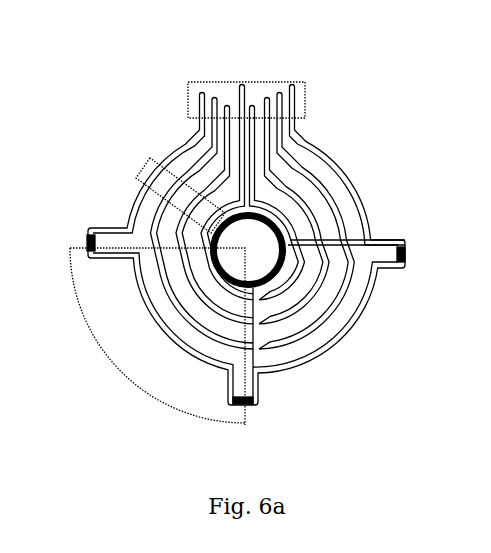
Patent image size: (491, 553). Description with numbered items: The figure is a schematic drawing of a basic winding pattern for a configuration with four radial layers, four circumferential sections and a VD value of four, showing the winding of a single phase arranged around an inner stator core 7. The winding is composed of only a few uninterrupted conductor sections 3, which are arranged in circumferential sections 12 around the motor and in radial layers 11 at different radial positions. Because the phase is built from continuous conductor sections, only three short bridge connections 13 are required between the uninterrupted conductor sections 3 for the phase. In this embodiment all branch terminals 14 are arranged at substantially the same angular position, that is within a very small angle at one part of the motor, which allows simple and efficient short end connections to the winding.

The uninterrupted conductor section 3 is at (331, 338).
The inner stator core 7 is at (281, 222).
The radial layer 11 is at (140, 178).
The circumferential section 12 is at (108, 363).
The short bridge connection 13 is at (88, 240).
The branch terminal 14 is at (304, 84).